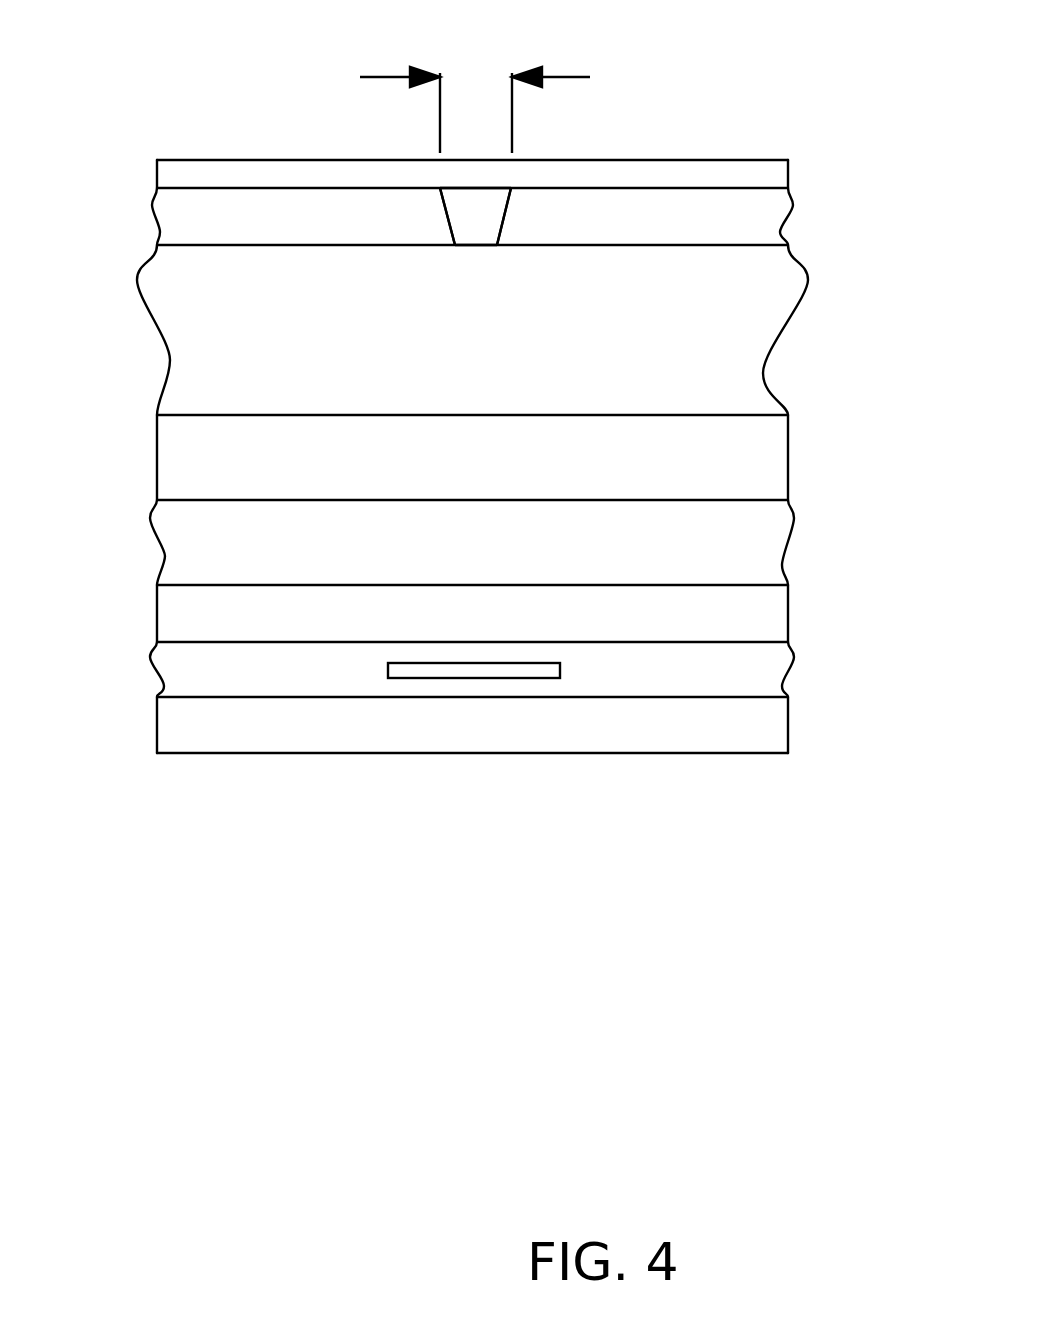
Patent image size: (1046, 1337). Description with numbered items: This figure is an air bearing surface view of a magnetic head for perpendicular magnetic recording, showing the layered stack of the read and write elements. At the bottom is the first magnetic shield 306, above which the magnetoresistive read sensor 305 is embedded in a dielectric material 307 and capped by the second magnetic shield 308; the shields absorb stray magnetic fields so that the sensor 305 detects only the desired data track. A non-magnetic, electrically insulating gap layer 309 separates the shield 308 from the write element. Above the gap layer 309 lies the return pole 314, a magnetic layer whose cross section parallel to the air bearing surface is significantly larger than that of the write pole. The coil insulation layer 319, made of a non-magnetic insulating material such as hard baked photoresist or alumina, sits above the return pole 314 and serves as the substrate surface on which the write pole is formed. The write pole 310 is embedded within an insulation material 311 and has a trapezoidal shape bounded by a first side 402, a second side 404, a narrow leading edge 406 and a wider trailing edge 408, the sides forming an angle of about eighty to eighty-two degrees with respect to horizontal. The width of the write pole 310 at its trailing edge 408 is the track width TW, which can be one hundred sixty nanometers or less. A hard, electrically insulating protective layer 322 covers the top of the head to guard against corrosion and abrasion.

The protective layer 322 is at (633, 178).
The insulation material 311 is at (187, 217).
The write pole 310 is at (478, 223).
The second side 404 is at (445, 218).
The first side 402 is at (503, 218).
The leading edge 406 is at (468, 246).
The trailing edge 408 is at (470, 187).
The track width TW is at (580, 77).
The coil insulation layer 319 is at (543, 358).
The return pole 314 is at (545, 468).
The gap layer 309 is at (545, 553).
The second magnetic shield 308 is at (545, 613).
The dielectric material 307 is at (207, 665).
The magnetoresistive read sensor 305 is at (560, 667).
The first magnetic shield 306 is at (545, 728).